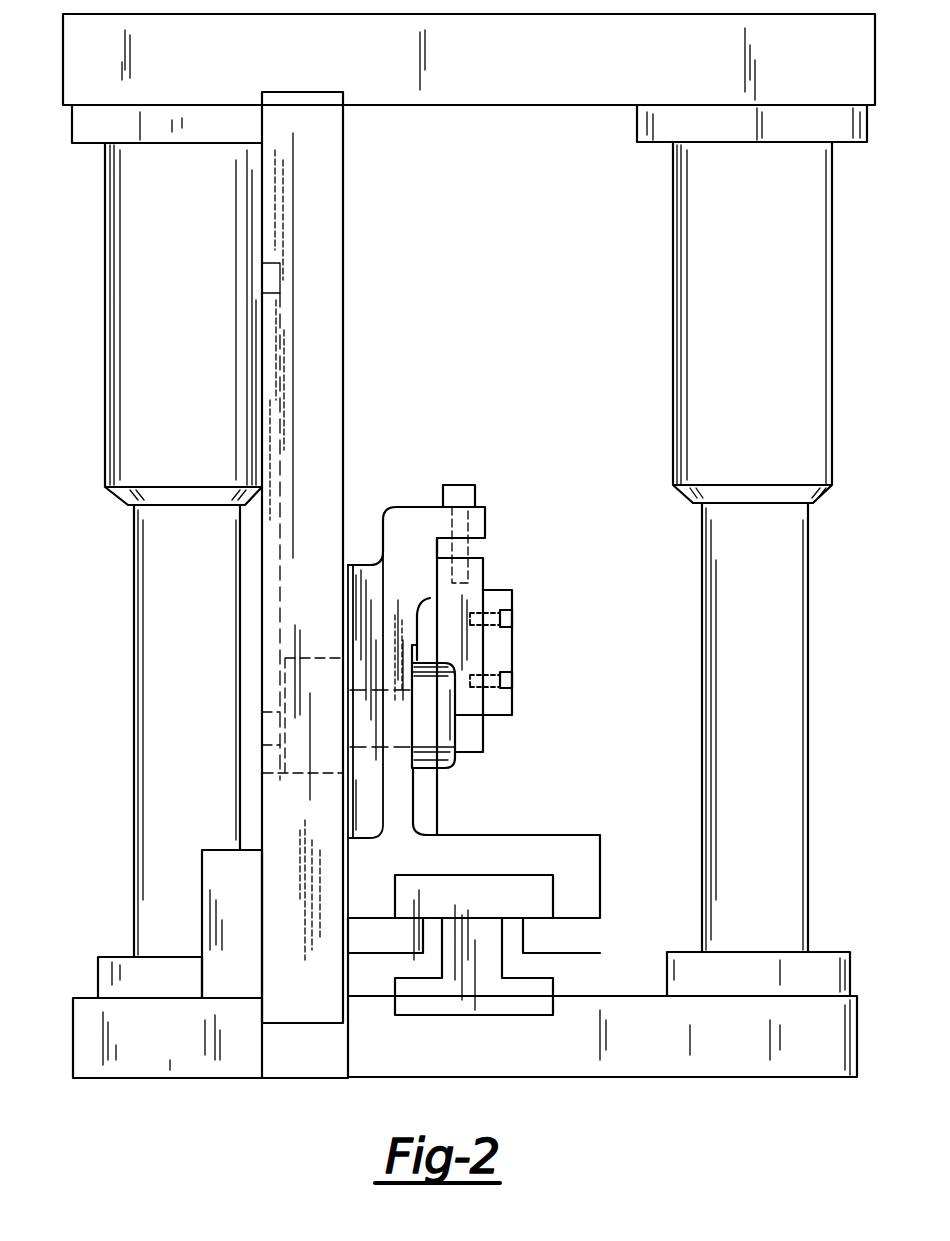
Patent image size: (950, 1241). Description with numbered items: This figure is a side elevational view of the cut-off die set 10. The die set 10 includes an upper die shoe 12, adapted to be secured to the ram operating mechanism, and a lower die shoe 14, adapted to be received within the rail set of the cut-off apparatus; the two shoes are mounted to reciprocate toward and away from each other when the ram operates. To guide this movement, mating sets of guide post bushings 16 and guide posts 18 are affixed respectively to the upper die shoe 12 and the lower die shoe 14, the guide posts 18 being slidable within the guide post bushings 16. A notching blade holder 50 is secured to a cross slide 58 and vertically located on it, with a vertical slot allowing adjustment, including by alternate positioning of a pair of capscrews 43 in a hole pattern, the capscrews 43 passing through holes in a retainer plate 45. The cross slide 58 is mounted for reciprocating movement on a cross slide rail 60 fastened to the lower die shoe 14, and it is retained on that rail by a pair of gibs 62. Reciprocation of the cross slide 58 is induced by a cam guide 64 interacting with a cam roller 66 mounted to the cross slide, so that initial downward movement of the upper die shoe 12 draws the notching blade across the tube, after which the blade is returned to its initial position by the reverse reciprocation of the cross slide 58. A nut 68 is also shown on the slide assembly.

The die set 10 is at (866, 690).
The upper die shoe 12 is at (63, 93).
The lower die shoe 14 is at (73, 1035).
The guide post bushings 16 is at (104, 394).
The guide posts 18 is at (133, 728).
The capscrews 43 is at (512, 682).
The retainer plate 45 is at (512, 591).
The notching blade holder 50 is at (487, 520).
The cross slide 58 is at (567, 842).
The cross slide rail 60 is at (549, 892).
The gibs 62 is at (389, 948).
The cam guide 64 is at (345, 368).
The cam roller 66 is at (318, 655).
The nut 68 is at (453, 766).